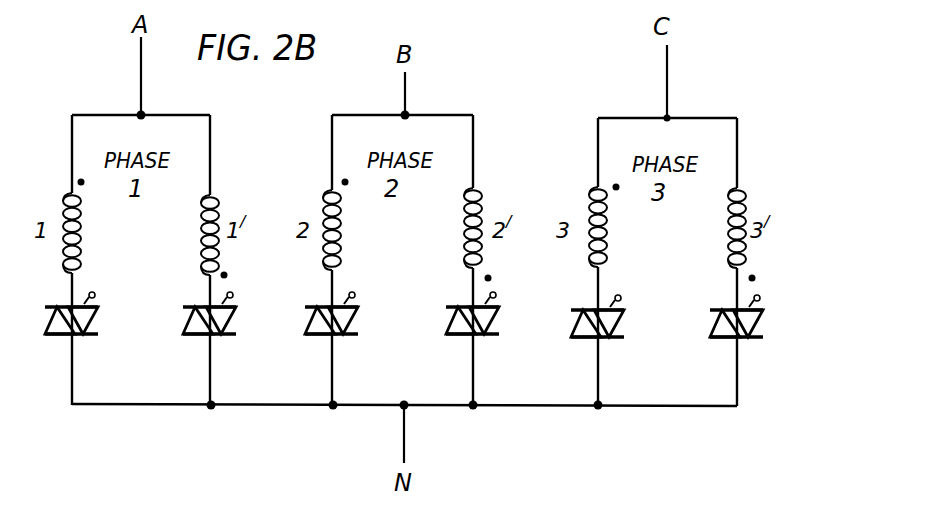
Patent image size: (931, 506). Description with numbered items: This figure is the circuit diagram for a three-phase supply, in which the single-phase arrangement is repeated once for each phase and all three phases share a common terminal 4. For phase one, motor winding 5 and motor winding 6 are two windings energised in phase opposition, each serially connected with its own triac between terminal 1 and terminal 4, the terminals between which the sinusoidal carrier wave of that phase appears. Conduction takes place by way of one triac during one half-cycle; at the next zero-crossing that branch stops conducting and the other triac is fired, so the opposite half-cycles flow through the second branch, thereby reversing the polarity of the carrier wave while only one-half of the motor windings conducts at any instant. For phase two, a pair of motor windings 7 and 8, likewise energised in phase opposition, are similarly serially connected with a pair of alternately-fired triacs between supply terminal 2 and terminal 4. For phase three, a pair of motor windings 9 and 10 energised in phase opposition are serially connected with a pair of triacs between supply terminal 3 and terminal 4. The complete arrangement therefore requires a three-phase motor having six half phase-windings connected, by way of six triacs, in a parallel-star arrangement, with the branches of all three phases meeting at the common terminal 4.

The terminal 1 is at (143, 113).
The supply terminal 2 is at (407, 113).
The supply terminal 3 is at (669, 116).
The terminal 4 is at (408, 408).
The motor winding 5 is at (80, 233).
The motor winding 6 is at (202, 236).
The motor winding 7 is at (340, 222).
The motor winding 8 is at (465, 229).
The motor winding 9 is at (606, 237).
The motor winding 10 is at (728, 229).